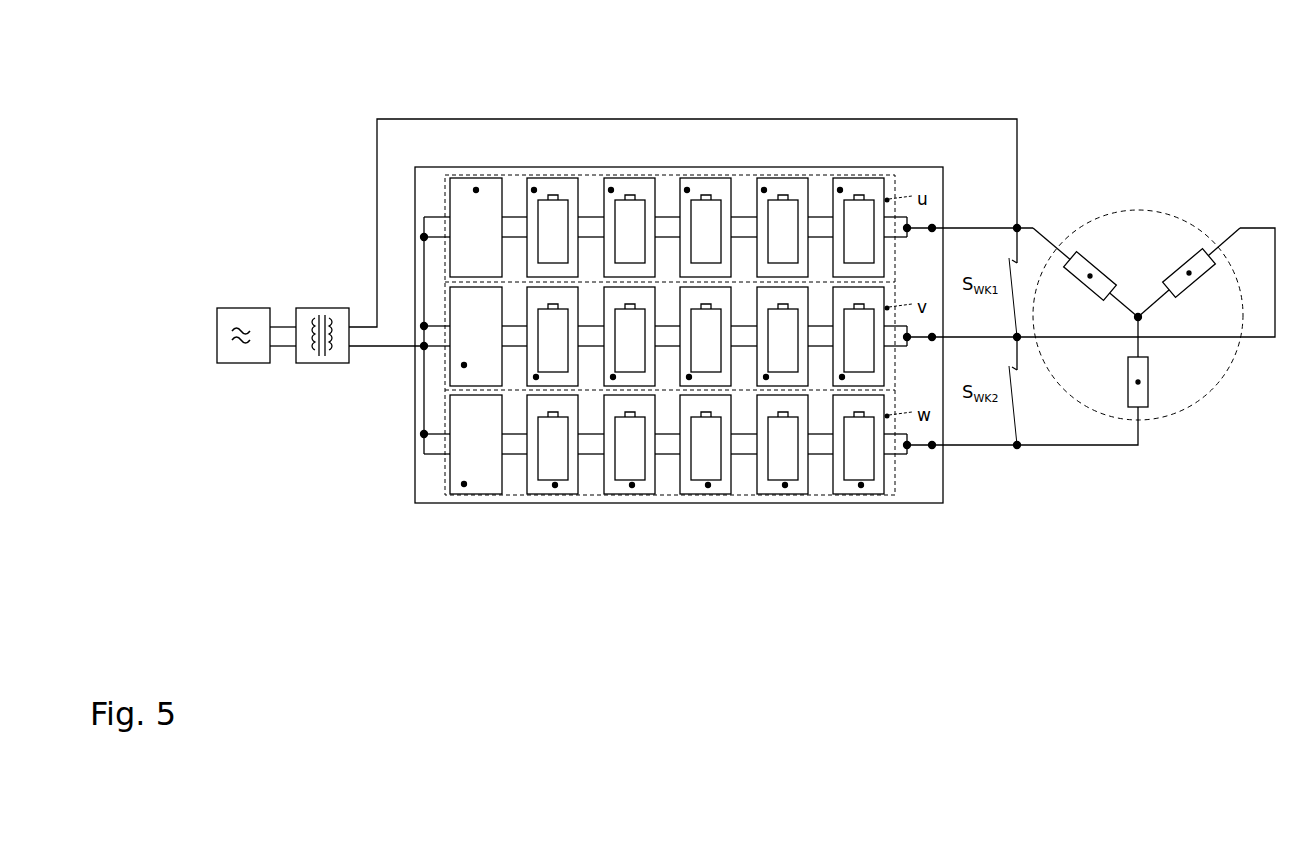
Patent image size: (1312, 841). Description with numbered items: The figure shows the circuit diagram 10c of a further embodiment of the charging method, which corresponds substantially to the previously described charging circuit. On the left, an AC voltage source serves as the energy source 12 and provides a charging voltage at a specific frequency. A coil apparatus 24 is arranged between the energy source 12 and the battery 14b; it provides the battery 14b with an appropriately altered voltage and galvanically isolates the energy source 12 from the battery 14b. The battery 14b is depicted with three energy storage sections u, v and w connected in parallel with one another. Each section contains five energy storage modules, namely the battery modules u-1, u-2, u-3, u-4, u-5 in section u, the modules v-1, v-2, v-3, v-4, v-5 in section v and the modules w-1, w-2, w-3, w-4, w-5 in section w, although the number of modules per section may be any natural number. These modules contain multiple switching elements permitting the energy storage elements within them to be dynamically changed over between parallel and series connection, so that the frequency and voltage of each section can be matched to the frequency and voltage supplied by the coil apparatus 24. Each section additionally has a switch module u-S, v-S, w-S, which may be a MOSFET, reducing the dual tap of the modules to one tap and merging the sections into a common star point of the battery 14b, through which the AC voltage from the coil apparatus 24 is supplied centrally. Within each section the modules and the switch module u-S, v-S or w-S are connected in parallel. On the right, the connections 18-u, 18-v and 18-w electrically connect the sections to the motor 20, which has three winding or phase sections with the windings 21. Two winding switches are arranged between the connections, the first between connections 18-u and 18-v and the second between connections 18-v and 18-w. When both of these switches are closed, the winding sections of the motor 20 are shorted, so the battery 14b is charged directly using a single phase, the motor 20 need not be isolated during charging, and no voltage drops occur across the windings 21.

The circuit diagram 10c is at (378, 83).
The energy source 12 is at (228, 292).
The coil apparatus 24 is at (313, 318).
The battery 14b is at (400, 519).
The switch module u-S is at (476, 190).
The switch module v-S is at (464, 365).
The switch module w-S is at (464, 484).
The energy storage module u-1 is at (534, 190).
The energy storage module u-2 is at (611, 190).
The energy storage module u-3 is at (687, 190).
The energy storage module u-4 is at (764, 190).
The energy storage module u-5 is at (840, 190).
The energy storage module v-1 is at (536, 377).
The energy storage module v-2 is at (613, 377).
The energy storage module v-3 is at (689, 377).
The energy storage module v-4 is at (766, 377).
The energy storage module v-5 is at (842, 377).
The energy storage module w-1 is at (555, 485).
The energy storage module w-2 is at (632, 485).
The energy storage module w-3 is at (708, 485).
The energy storage module w-4 is at (785, 485).
The energy storage module w-5 is at (861, 485).
The connection 18-u is at (932, 228).
The connection 18-v is at (932, 337).
The connection 18-w is at (932, 445).
The motor 20 is at (1139, 291).
The windings 21 is at (1090, 276).